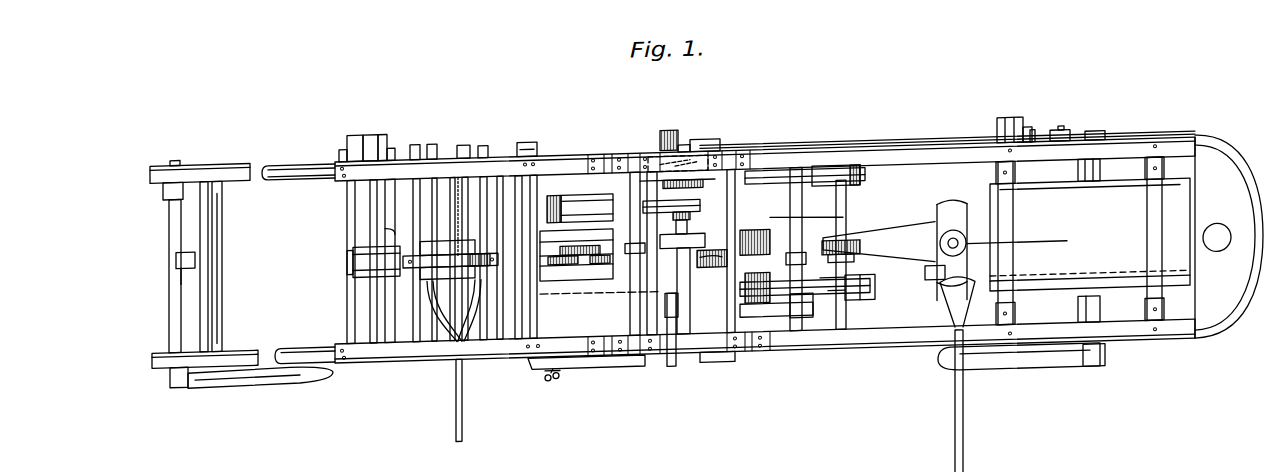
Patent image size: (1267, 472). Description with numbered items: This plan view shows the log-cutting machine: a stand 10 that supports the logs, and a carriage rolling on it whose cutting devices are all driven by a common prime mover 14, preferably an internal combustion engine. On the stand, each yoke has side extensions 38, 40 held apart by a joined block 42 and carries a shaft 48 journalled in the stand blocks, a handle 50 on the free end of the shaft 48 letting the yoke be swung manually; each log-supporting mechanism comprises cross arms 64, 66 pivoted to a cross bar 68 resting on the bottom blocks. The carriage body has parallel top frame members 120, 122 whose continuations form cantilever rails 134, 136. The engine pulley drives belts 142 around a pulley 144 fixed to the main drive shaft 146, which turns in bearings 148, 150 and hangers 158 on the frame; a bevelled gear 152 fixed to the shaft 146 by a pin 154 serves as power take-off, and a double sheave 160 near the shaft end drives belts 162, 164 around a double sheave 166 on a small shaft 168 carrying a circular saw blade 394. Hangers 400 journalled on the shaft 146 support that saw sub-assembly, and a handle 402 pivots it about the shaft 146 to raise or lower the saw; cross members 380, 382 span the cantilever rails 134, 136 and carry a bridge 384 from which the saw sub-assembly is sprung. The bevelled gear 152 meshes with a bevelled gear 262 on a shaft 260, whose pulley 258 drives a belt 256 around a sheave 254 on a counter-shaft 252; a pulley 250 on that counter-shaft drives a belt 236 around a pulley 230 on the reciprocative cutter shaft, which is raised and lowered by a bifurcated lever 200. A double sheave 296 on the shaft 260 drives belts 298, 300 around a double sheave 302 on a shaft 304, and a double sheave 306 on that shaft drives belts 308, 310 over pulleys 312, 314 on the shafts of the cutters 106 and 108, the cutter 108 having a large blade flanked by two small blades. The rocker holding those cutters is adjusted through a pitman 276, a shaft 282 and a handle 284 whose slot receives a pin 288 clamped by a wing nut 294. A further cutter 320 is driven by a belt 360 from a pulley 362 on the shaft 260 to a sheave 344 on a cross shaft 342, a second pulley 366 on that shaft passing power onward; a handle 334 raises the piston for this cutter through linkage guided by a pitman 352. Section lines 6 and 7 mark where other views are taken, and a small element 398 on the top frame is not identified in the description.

The stand 10 is at (924, 275).
The prime mover 14 is at (1125, 223).
The yoke side extension 38 is at (172, 272).
The yoke side extension 40 is at (170, 248).
The block 42 is at (176, 257).
The shaft 48 is at (172, 296).
The handle 50 is at (262, 388).
The cross arm 64 is at (215, 283).
The cross arm 66 is at (216, 222).
The cross bar 68 is at (220, 254).
The cutter 106 is at (790, 215).
The cutter blade 108 is at (960, 263).
The top frame member 120 is at (880, 168).
The top frame member 122 is at (881, 354).
The cantilever frame member 134 is at (305, 348).
The cantilever frame member 136 is at (288, 164).
The belt 142 is at (1014, 140).
The pulley 144 is at (1022, 145).
The main drive shaft 146 is at (957, 158).
The bearing 148 is at (1056, 151).
The bearing 150 is at (706, 150).
The bevelled gear 152 is at (663, 150).
The pin 154 is at (680, 156).
The hanger bearing 158 is at (527, 148).
The double sheave 160 is at (383, 138).
The belt 162 is at (370, 136).
The belt 164 is at (355, 136).
The double sheave 166 is at (357, 279).
The shaft 168 is at (395, 236).
The bifurcated lever 200 is at (947, 326).
The pulley 230 is at (950, 242).
The belt 236 is at (900, 278).
The pulley 250 is at (838, 258).
The counter-shaft 252 is at (846, 220).
The sheave 254 is at (832, 194).
The belt 256 is at (793, 181).
The pulley 258 is at (653, 166).
The shaft 260 is at (640, 238).
The bevelled gear 262 is at (718, 158).
The pitman 276 is at (770, 268).
The shaft 282 is at (753, 341).
The handle 284 is at (697, 374).
The pin 288 is at (553, 388).
The wing nut 294 is at (557, 379).
The double sheave 296 is at (672, 378).
The belt 298 is at (745, 316).
The belt 300 is at (817, 331).
The double sheave 302 is at (775, 329).
The shaft 304 is at (793, 200).
The double sheave 306 is at (820, 292).
The belt 308 is at (828, 305).
The belt 310 is at (733, 273).
The pulley 312 is at (862, 309).
The pulley 314 is at (687, 263).
The cutter 320 is at (622, 279).
The handle 334 is at (607, 375).
The cross shaft 342 is at (548, 204).
The sheave 344 is at (585, 163).
The pitman 352 is at (665, 276).
The belt 360 is at (610, 218).
The pulley 362 is at (684, 226).
The pulley 366 is at (536, 180).
The cross member 380 is at (502, 325).
The cross member 382 is at (408, 322).
The bridge 384 is at (490, 272).
The circular saw blade 394 is at (463, 350).
The block 398 is at (431, 147).
The hangers 400 is at (462, 149).
The handle 402 is at (456, 375).
The section line 6 is at (558, 296).
The section line 7 is at (682, 232).